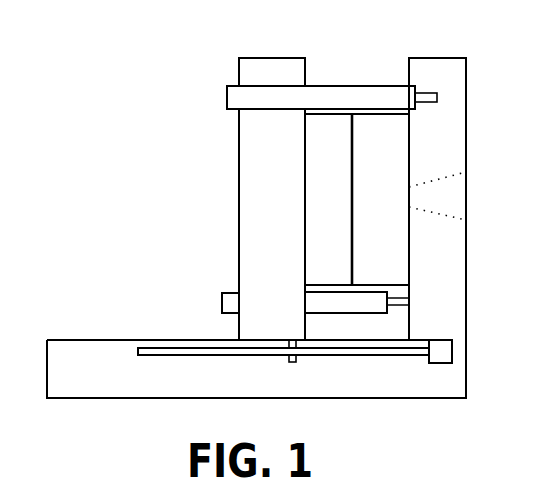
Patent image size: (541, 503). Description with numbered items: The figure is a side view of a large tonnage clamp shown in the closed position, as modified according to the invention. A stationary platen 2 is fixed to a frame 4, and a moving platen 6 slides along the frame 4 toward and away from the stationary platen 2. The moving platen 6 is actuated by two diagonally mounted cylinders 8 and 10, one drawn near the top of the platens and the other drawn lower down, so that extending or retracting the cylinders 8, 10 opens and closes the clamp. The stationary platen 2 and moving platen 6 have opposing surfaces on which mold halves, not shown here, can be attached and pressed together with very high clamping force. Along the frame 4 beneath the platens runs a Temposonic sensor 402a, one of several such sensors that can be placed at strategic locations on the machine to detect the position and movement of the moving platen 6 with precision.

The stationary platen 2 is at (453, 65).
The frame 4 is at (466, 377).
The moving platen 6 is at (253, 173).
The cylinder 8 is at (230, 95).
The cylinder 10 is at (230, 302).
The Temposonic sensor 402a is at (312, 355).